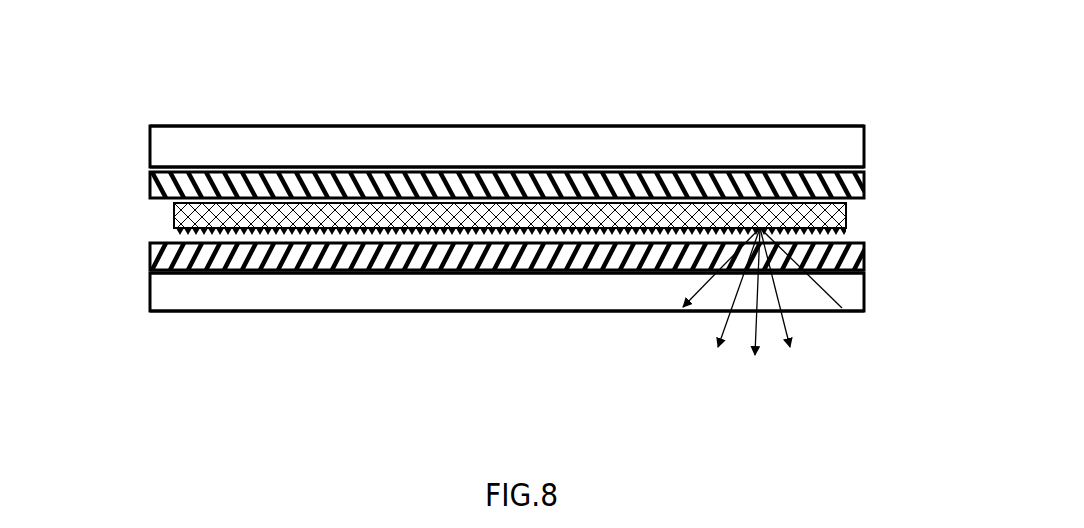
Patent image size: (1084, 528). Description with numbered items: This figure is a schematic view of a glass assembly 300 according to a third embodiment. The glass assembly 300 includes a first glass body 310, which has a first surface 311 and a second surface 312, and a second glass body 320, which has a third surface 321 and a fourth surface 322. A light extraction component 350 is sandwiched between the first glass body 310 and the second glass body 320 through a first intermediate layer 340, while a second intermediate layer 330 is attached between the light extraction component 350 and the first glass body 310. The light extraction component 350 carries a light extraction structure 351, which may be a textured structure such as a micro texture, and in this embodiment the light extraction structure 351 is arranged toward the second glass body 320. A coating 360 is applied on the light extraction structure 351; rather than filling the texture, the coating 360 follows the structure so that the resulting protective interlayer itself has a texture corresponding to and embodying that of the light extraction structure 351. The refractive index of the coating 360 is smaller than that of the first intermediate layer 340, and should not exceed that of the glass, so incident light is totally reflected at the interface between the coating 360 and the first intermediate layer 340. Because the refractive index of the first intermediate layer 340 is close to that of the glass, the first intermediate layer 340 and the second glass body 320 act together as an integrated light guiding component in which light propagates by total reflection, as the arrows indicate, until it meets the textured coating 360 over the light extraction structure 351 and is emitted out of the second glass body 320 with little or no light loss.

The glass assembly 300 is at (545, 33).
The first glass body 310 is at (730, 148).
The first surface 311 is at (400, 125).
The second surface 312 is at (572, 165).
The second glass body 320 is at (240, 300).
The third surface 321 is at (442, 274).
The fourth surface 322 is at (570, 311).
The second intermediate layer 330 is at (157, 188).
The first intermediate layer 340 is at (150, 258).
The light extraction component 350 is at (567, 205).
The light extraction structure 351 is at (845, 227).
The coating 360 is at (176, 232).